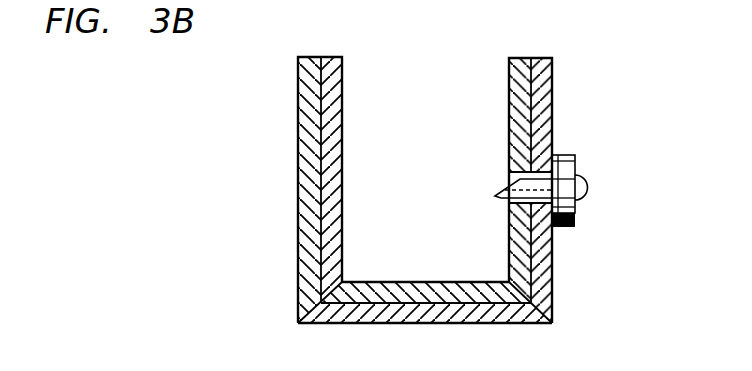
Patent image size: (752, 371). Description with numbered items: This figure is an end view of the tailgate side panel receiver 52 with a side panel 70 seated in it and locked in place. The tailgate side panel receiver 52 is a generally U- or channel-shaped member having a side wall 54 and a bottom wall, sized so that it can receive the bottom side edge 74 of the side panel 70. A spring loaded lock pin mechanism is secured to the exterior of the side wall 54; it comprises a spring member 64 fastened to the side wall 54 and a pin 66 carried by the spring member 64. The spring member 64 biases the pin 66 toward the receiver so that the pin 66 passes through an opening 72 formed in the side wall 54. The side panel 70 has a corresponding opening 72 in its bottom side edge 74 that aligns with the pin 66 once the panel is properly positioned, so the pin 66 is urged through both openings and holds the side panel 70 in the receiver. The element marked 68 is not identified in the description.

The tailgate side panel receiver 52 is at (559, 73).
The side wall 54 is at (552, 288).
The spring member 64 is at (577, 154).
The pin 66 is at (587, 187).
The washer 68 is at (576, 218).
The side panel 70 is at (343, 87).
The opening 72 is at (510, 172).
The bottom side edge 74 is at (510, 250).